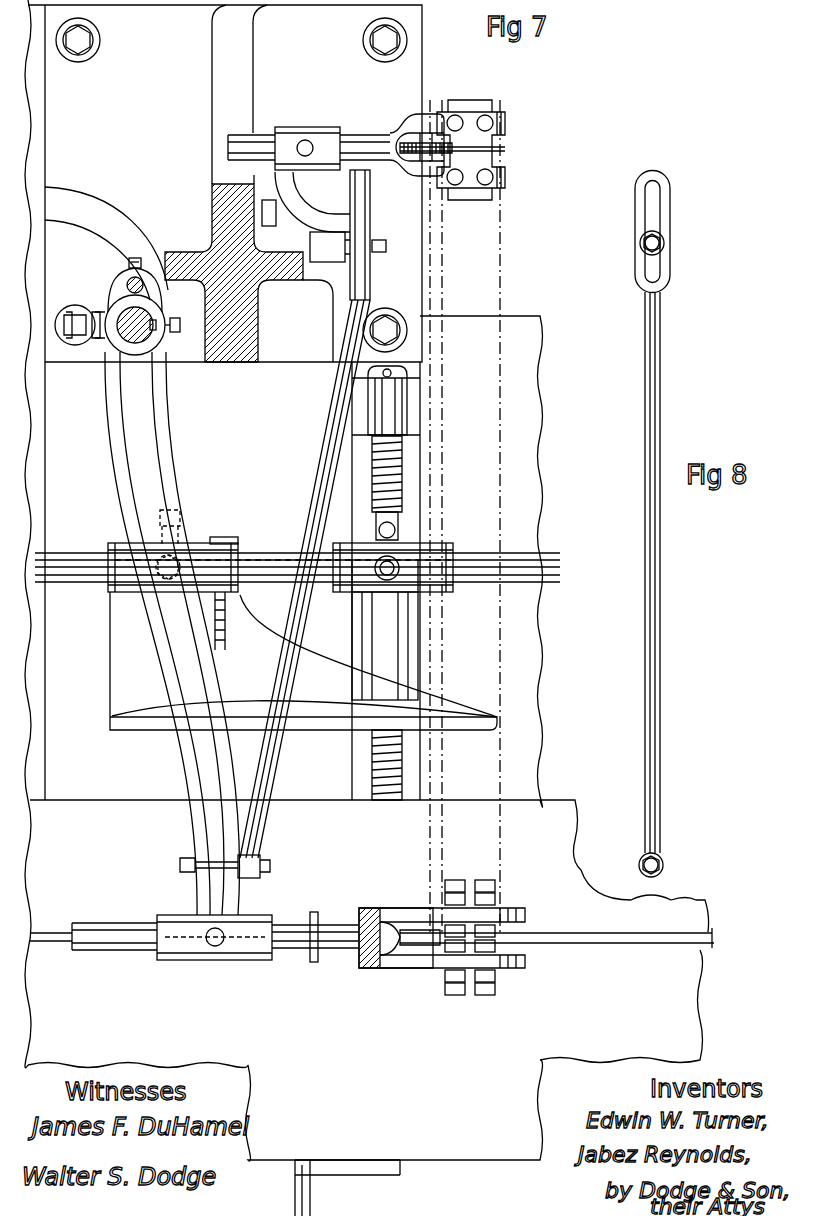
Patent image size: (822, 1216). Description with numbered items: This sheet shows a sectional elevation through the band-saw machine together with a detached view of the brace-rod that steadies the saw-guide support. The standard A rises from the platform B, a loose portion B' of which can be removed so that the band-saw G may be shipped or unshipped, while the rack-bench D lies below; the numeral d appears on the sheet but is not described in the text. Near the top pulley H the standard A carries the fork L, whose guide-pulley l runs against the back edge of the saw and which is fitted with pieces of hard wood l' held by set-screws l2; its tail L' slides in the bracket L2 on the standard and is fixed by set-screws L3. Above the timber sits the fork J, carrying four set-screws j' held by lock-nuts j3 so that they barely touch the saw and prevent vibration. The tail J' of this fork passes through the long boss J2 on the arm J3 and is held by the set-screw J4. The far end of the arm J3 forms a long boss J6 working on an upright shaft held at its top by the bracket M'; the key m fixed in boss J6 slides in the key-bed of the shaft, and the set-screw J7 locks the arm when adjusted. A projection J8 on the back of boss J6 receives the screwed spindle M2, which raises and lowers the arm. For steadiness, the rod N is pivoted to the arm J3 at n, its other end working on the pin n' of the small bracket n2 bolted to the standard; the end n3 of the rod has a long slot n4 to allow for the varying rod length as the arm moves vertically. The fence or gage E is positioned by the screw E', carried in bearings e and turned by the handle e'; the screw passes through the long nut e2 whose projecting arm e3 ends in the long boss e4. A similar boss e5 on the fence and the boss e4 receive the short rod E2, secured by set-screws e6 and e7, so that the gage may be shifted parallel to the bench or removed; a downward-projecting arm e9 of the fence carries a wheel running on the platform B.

In FIG. 7, the standard A is at (225, 183).
In FIG. 7, the platform B is at (232, 581).
In FIG. 7, the loose portion of platform B' is at (481, 561).
In FIG. 7, the rack-bench D is at (368, 980).
In FIG. 7, the shaft d is at (48, 945).
In FIG. 7, the fence or gage E is at (303, 661).
In FIG. 7, the screw E' is at (384, 618).
In FIG. 7, the short shaft or rod E2 is at (258, 562).
In FIG. 7, the bearings e is at (386, 400).
In FIG. 7, the handle e' is at (347, 1188).
In FIG. 7, the long nut e2 is at (385, 646).
In FIG. 7, the projecting arm e3 is at (398, 534).
In FIG. 7, the long boss e4 is at (385, 572).
In FIG. 7, the boss e5 is at (182, 568).
In FIG. 7, the set-screw e6 is at (387, 568).
In FIG. 7, the set-screw e7 is at (180, 518).
In FIG. 7, the downward-projecting arm e9 is at (228, 532).
In FIG. 7, the saw G is at (500, 149).
In FIG. 7, the top pulley H is at (500, 290).
In FIG. 7, the fork J is at (442, 937).
In FIG. 7, the tail of fork J J' is at (315, 950).
In FIG. 7, the long boss J2 is at (252, 962).
In FIG. 7, the arm or bracket J3 is at (122, 420).
In FIG. 7, the set-screw J4 is at (215, 947).
In FIG. 7, the long boss J6 is at (155, 322).
In FIG. 7, the set-screw J7 is at (72, 335).
In FIG. 7, the projection J8 is at (128, 275).
In FIG. 7, the set-screws j' is at (470, 936).
In FIG. 7, the lock-nuts j3 is at (495, 925).
In FIG. 7, the fork L is at (417, 136).
In FIG. 7, the tail of fork L L' is at (365, 136).
In FIG. 7, the bracket L2 is at (318, 128).
In FIG. 7, the set-screws L3 is at (305, 140).
In FIG. 7, the guide-pulley l is at (422, 169).
In FIG. 7, the pieces of hard wood l' is at (471, 149).
In FIG. 7, the set-screws l2 is at (458, 114).
In FIG. 7, the bracket M' is at (126, 322).
In FIG. 7, the screwed spindle M2 is at (127, 287).
In FIG. 7, the key m is at (176, 334).
In FIG. 7, the rod N is at (350, 330).
In FIG. 8, the rod N is at (660, 572).
In FIG. 7, the pivot n is at (232, 866).
In FIG. 8, the pivot n is at (660, 865).
In FIG. 7, the pin n' is at (388, 242).
In FIG. 8, the pin n' is at (663, 243).
In FIG. 7, the small bracket n2 is at (325, 262).
In FIG. 7, the slotted end of rod N n3 is at (316, 235).
In FIG. 8, the slotted end of rod N n3 is at (670, 203).
In FIG. 8, the long slot n4 is at (648, 203).